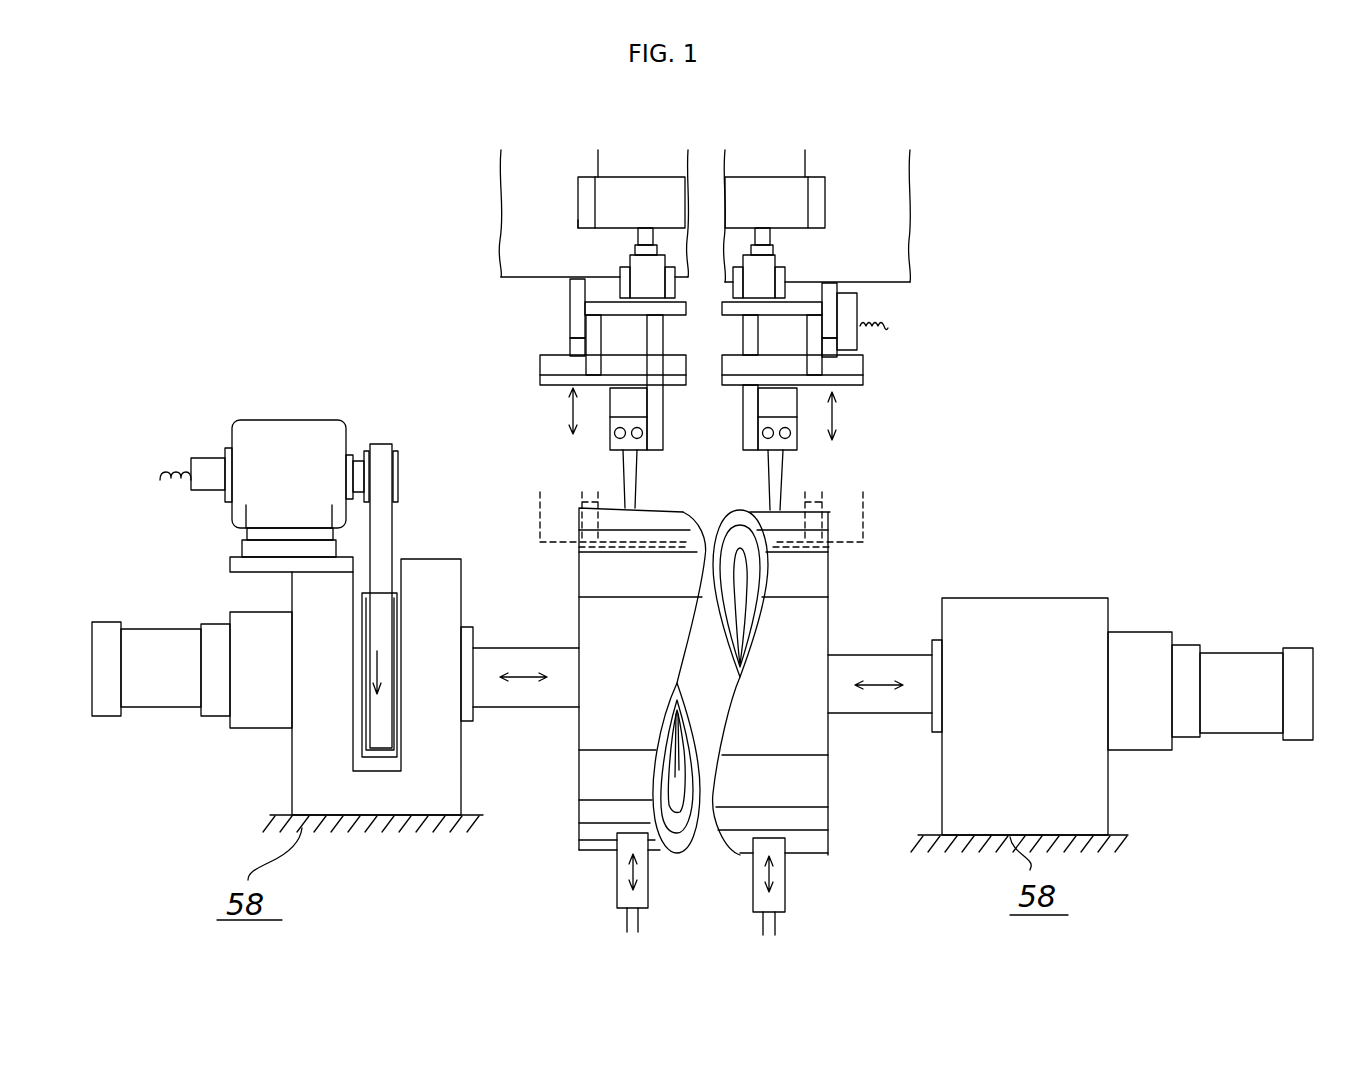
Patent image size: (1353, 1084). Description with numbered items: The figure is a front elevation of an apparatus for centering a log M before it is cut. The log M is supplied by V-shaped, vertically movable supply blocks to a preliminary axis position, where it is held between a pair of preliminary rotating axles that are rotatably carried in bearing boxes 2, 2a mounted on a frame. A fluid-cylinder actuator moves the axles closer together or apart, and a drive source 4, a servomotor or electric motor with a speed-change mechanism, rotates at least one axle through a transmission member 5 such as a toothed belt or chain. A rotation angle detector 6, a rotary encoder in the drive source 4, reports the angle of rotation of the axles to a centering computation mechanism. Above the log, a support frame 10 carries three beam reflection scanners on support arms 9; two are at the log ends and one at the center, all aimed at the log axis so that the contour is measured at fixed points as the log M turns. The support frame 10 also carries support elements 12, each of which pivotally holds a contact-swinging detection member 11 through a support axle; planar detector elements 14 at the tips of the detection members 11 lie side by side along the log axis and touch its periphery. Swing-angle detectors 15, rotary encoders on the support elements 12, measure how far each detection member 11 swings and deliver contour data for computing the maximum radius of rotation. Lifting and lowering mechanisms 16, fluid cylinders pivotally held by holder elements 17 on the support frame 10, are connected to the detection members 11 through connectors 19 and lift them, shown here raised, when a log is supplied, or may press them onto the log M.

The bearing box 2 is at (309, 767).
The bearing box 2a is at (1003, 623).
The drive source 4 is at (283, 438).
The transmission member 5 is at (379, 450).
The rotation angle detector 6 is at (205, 468).
The support arms 9 is at (658, 393).
The support frame 10 is at (517, 202).
The contact-swinging detection members 11 is at (590, 352).
The support element 12 is at (573, 305).
The planar detector elements 14 is at (855, 370).
The swing-angle detectors 15 is at (852, 313).
The lifting and lowering mechanisms 16 is at (800, 207).
The holder element 17 is at (578, 220).
The connector 19 is at (783, 273).
The log M is at (802, 728).